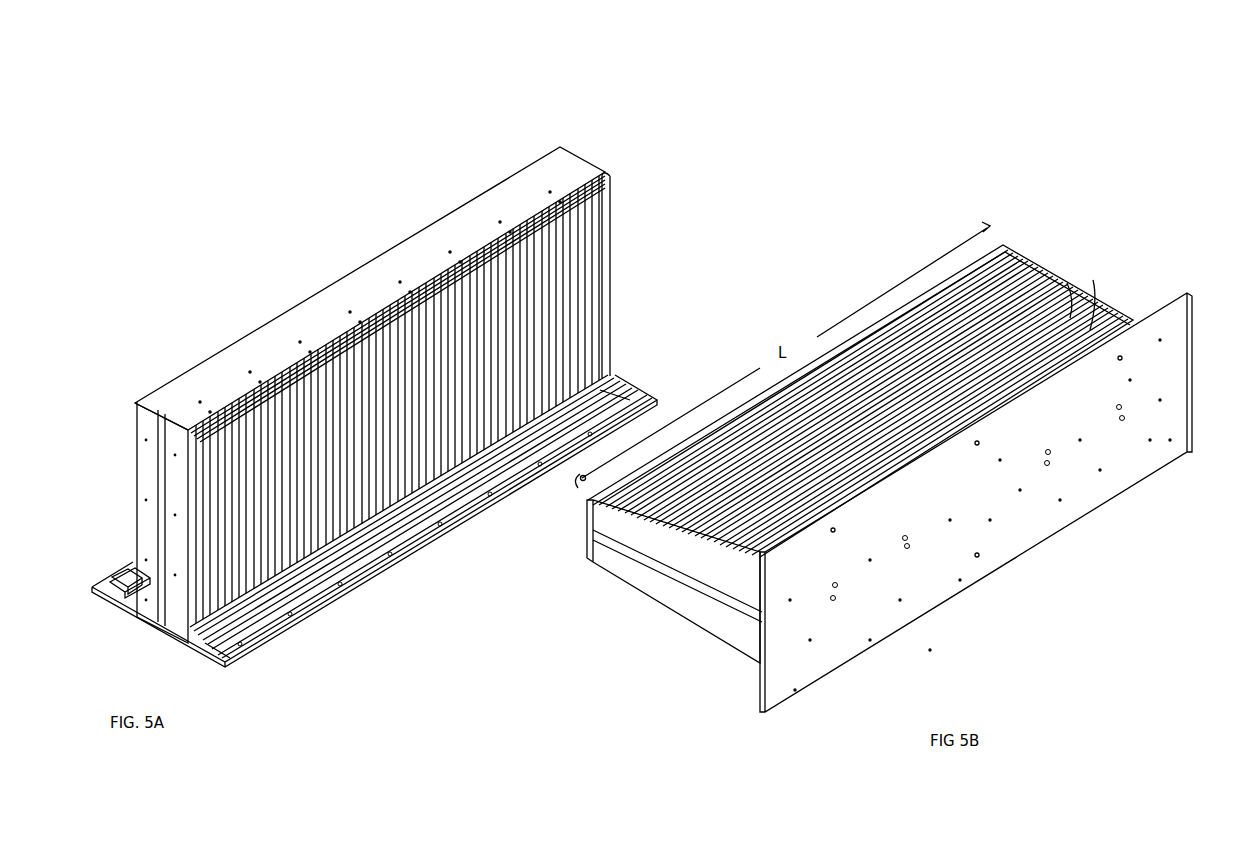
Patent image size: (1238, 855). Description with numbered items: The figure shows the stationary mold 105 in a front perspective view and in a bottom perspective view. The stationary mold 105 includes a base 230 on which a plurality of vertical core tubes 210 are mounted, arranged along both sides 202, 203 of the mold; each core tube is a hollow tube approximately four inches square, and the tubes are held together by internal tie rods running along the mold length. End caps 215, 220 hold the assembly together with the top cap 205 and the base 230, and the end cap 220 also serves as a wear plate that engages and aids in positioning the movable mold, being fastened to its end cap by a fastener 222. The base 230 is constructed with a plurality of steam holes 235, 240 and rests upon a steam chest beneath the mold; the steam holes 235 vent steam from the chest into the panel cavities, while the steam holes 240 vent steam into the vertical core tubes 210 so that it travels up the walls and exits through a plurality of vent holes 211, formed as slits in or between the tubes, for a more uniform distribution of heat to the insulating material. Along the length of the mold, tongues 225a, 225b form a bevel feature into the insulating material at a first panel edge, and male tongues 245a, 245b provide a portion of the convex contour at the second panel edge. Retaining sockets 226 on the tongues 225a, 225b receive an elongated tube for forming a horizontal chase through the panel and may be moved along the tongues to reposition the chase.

In FIG. 5A, the stationary mold 105 is at (451, 128).
In FIG. 5B, the stationary mold 105 is at (1124, 192).
In FIG. 5A, the side of the stationary mold 202 is at (200, 630).
In FIG. 5A, the side of the stationary mold 203 is at (505, 158).
In FIG. 5A, the top cap 205 is at (562, 170).
In FIG. 5A, the vertical core tubes 210 is at (592, 327).
In FIG. 5B, the vertical core tubes 210 is at (1043, 322).
In FIG. 5B, the vent holes 211 is at (1093, 280).
In FIG. 5A, the end cap 215 is at (612, 205).
In FIG. 5A, the end cap / wear plate 220 is at (137, 478).
In FIG. 5B, the end cap / wear plate 220 is at (702, 618).
In FIG. 5B, the fastener 222 is at (660, 578).
In FIG. 5A, the tongue 225a is at (418, 517).
In FIG. 5A, the tongue 225b is at (125, 572).
In FIG. 5A, the retaining sockets 226 is at (280, 620).
In FIG. 5A, the base 230 is at (653, 400).
In FIG. 5B, the base 230 is at (1010, 565).
In FIG. 5B, the steam holes 235 is at (1120, 360).
In FIG. 5B, the steam holes 240 is at (1116, 418).
In FIG. 5B, the male tongue 245a is at (958, 268).
In FIG. 5A, the male tongue 245b is at (134, 398).